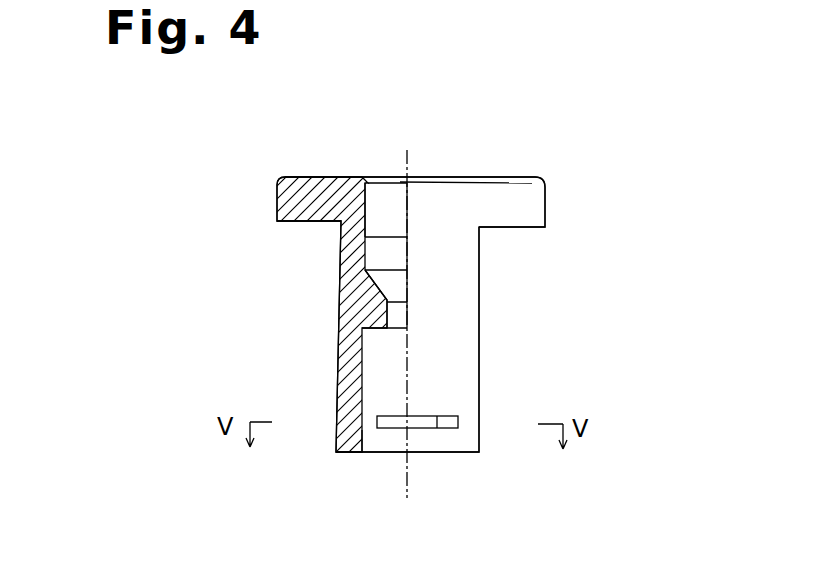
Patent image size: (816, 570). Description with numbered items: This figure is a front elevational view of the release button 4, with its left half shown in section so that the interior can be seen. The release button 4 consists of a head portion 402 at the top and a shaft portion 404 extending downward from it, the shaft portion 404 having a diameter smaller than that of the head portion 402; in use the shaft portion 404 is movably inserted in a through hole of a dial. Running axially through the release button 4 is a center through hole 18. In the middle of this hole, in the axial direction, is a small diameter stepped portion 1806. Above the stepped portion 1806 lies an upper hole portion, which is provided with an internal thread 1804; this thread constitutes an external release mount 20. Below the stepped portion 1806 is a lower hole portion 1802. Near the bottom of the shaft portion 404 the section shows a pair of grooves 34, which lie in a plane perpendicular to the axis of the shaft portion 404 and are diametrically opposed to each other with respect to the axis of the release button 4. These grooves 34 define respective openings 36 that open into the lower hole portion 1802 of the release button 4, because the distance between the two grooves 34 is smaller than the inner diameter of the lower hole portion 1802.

The release button 4 is at (574, 172).
The head portion 402 is at (490, 177).
The shaft portion 404 is at (479, 305).
The center through hole 18 is at (362, 353).
The lower hole portion 1802 is at (365, 432).
The internal thread 1804 is at (370, 195).
The small diameter stepped portion 1806 is at (378, 318).
The external release mount 20 is at (368, 230).
The grooves 34 is at (430, 428).
The openings 36 is at (417, 426).